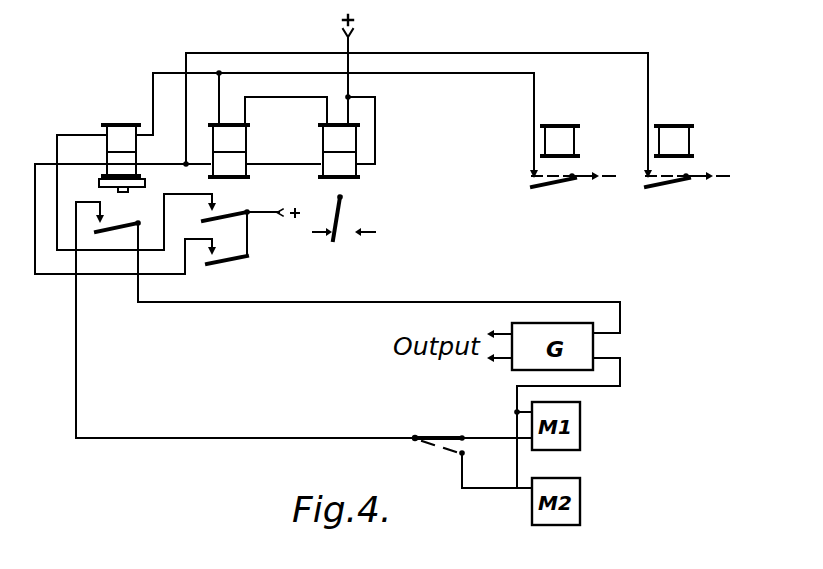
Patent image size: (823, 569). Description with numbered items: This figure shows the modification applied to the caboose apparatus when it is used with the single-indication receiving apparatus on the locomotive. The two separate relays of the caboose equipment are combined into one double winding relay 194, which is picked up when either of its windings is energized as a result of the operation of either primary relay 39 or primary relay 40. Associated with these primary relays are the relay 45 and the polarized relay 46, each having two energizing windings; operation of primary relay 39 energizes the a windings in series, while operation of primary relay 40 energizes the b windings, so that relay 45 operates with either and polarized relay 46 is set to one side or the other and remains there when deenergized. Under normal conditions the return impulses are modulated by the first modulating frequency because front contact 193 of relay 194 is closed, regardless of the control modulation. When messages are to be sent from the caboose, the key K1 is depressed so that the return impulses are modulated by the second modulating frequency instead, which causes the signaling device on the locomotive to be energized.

The double winding relay 194 is at (123, 137).
The front contact 193 is at (102, 222).
The relay 45 is at (240, 143).
The polarized relay 46 is at (325, 142).
The primary relay 39 is at (572, 145).
The primary relay 40 is at (686, 145).
The key K1 is at (423, 418).